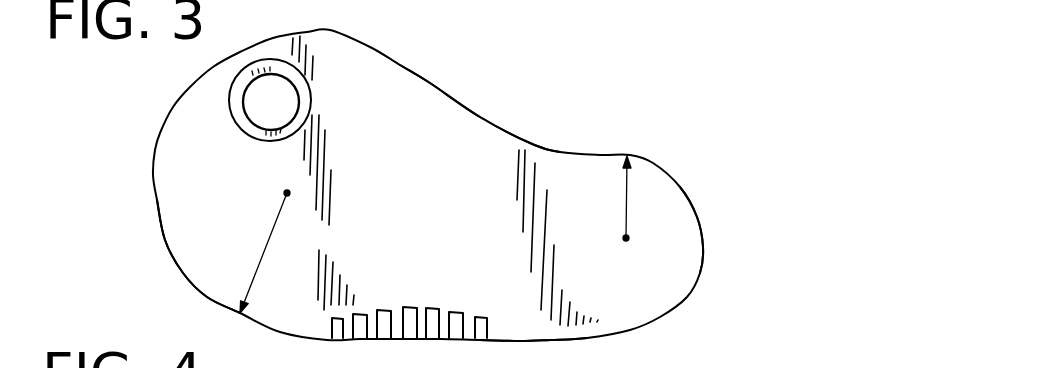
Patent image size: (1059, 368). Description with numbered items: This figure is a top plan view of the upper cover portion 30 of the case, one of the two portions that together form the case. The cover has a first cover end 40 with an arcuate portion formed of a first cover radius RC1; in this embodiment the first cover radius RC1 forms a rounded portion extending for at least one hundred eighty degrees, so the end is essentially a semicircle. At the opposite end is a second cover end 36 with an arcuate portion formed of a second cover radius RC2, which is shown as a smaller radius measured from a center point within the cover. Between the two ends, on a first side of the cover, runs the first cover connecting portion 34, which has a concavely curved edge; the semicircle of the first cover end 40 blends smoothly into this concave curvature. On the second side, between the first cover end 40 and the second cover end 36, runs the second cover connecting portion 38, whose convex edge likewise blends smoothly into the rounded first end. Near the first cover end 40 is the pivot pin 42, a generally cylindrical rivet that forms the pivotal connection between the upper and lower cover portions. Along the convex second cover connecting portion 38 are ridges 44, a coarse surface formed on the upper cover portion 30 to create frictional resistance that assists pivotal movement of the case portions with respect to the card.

The upper cover portion 30 is at (682, 126).
The first cover connecting portion 34 is at (477, 117).
The second cover end 36 is at (702, 215).
The second cover connecting portion 38 is at (548, 339).
The first cover end 40 is at (165, 240).
The pivot pin 42 is at (310, 94).
The ridges 44 is at (408, 305).
The first cover radius RC1 is at (265, 253).
The second cover radius RC2 is at (627, 205).